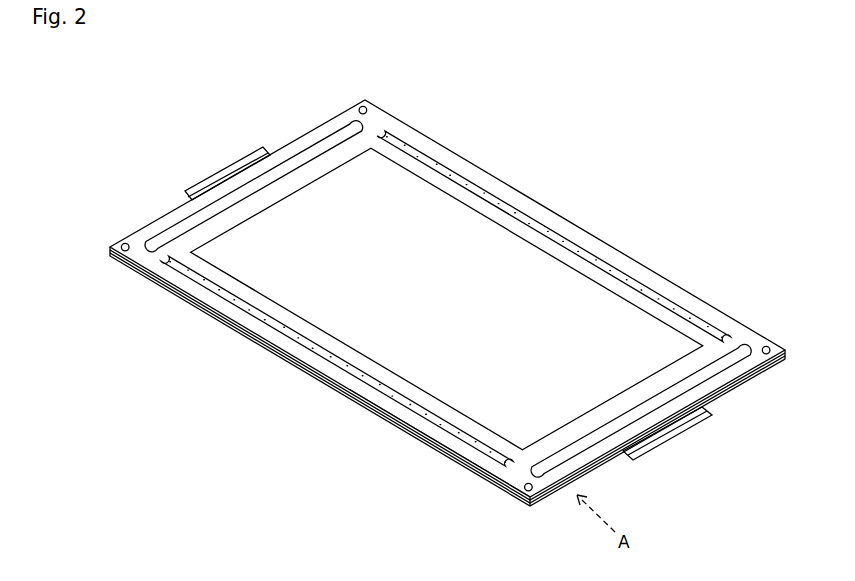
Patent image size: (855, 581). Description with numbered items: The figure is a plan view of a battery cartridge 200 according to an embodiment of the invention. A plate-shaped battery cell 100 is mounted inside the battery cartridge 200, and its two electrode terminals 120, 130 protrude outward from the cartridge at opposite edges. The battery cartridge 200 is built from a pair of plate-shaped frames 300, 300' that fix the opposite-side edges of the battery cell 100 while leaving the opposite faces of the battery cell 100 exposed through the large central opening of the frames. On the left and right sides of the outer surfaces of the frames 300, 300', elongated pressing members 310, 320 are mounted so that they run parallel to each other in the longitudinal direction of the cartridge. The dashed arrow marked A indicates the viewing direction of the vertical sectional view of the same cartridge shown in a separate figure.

The battery cartridge 200 is at (60, 64).
The battery cell 100 is at (563, 303).
The electrode terminal 120 is at (227, 172).
The electrode terminal 130 is at (662, 432).
The frame 300 is at (447, 376).
The frame 300' is at (401, 443).
The pressing member 310 is at (452, 175).
The pressing member 320 is at (247, 312).